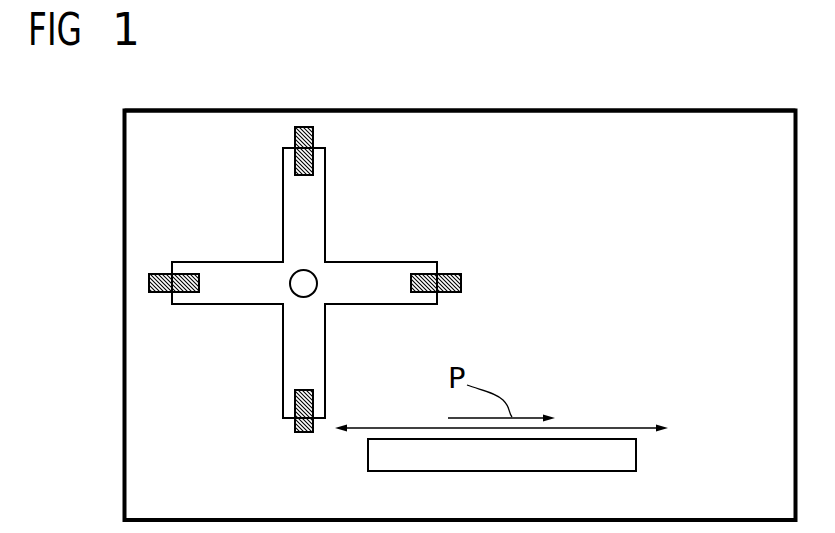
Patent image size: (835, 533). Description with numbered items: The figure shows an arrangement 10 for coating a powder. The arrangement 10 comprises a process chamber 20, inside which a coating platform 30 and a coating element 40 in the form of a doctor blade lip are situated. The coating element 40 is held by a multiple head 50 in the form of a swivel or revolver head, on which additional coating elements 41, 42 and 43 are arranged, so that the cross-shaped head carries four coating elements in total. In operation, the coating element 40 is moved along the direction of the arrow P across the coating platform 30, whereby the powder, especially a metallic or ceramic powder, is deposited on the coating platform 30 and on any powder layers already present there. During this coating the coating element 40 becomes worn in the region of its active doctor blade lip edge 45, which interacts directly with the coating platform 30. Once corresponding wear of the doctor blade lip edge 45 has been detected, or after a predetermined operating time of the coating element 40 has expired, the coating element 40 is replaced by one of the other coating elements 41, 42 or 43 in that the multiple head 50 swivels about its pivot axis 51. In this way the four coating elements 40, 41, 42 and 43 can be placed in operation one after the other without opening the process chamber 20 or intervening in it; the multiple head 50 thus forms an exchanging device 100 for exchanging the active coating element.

The arrangement 10 is at (696, 98).
The process chamber 20 is at (433, 109).
The exchanging device 100 is at (276, 217).
The multiple head 50 is at (363, 270).
The coating element 40 is at (297, 408).
The pivot axis 51 is at (312, 284).
The coating element 41 is at (162, 293).
The coating element 42 is at (313, 138).
The coating element 43 is at (453, 274).
The doctor blade lip edge 45 is at (297, 432).
The coating platform 30 is at (540, 462).